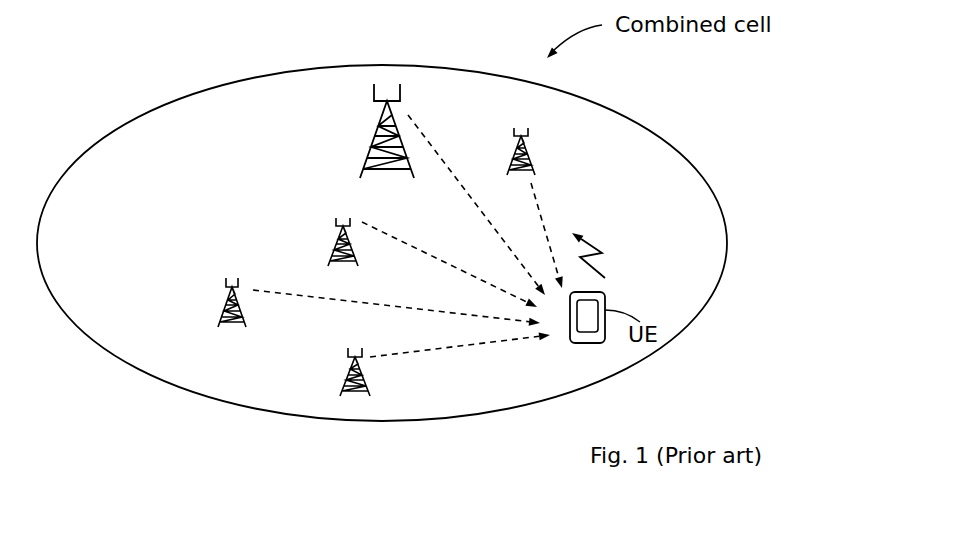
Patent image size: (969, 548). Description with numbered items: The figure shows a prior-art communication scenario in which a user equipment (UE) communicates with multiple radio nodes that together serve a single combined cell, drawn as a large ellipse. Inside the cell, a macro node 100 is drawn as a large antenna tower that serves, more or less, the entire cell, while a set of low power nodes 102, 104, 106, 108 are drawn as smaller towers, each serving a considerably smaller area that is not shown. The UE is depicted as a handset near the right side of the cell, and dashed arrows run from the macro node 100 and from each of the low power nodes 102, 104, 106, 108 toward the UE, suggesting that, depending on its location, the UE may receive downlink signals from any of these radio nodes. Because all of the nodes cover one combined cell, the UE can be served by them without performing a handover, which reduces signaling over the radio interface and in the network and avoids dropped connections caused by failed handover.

The macro node 100 is at (365, 160).
The low power node 102 is at (342, 385).
The low power node 104 is at (218, 313).
The low power node 106 is at (328, 243).
The low power node 108 is at (507, 161).